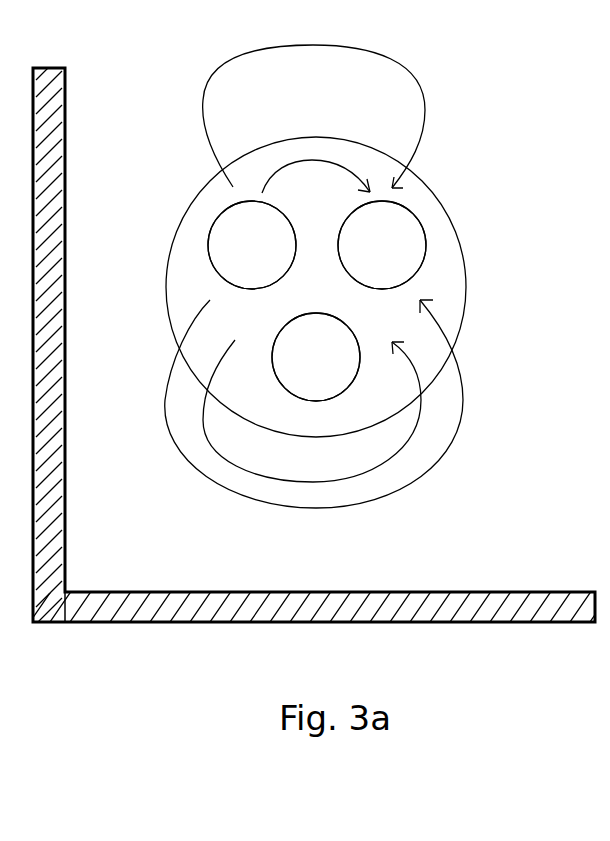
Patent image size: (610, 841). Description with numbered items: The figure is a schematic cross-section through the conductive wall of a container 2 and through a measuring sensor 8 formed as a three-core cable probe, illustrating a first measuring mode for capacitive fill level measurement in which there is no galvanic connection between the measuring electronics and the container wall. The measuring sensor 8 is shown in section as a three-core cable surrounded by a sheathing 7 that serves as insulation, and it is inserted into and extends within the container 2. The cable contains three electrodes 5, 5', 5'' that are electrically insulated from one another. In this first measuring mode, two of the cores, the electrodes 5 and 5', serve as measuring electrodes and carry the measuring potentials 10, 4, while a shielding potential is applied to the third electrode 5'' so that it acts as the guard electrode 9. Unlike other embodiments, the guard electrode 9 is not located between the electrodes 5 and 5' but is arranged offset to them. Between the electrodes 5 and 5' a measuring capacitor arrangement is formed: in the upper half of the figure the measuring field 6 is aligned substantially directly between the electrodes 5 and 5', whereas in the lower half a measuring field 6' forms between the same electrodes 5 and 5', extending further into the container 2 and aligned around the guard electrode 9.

The container 2 is at (478, 588).
The potential 4 is at (402, 258).
The electrode 5 is at (252, 245).
The electrode 5' is at (382, 245).
The electrode 5'' is at (316, 357).
The measuring field 6 is at (332, 128).
The measuring field 6' is at (304, 404).
The sheathing 7 is at (455, 227).
The measuring sensor 8 is at (447, 152).
The guard electrode 9 is at (333, 363).
The potential 10 is at (238, 245).